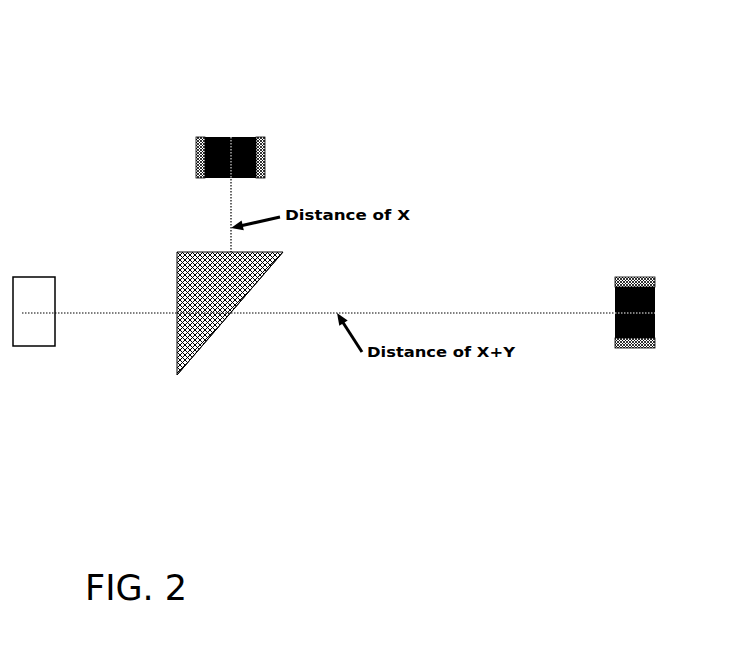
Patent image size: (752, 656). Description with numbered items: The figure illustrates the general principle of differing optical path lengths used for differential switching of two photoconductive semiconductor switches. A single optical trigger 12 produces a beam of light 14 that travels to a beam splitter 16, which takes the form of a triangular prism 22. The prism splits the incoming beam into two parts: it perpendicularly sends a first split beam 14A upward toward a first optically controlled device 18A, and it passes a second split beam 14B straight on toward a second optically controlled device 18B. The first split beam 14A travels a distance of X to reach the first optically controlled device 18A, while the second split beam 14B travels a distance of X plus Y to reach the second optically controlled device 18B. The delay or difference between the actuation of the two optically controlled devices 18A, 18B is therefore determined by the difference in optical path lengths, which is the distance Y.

The optical trigger 12 is at (31, 346).
The beam of light 14 is at (112, 313).
The first split beam 14A is at (231, 212).
The second split beam 14B is at (308, 313).
The beam splitter 16 is at (226, 338).
The first optically controlled device 18A is at (205, 137).
The second optically controlled device 18B is at (635, 277).
The triangular prism 22 is at (208, 338).